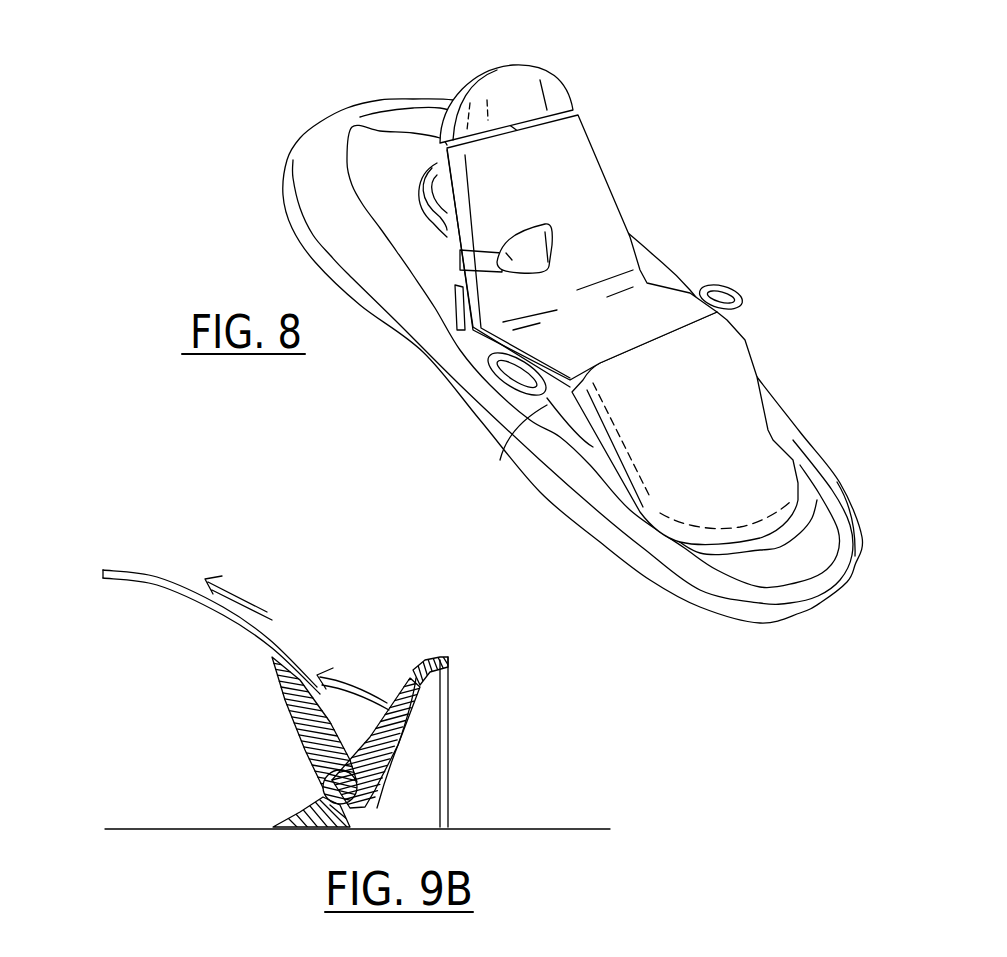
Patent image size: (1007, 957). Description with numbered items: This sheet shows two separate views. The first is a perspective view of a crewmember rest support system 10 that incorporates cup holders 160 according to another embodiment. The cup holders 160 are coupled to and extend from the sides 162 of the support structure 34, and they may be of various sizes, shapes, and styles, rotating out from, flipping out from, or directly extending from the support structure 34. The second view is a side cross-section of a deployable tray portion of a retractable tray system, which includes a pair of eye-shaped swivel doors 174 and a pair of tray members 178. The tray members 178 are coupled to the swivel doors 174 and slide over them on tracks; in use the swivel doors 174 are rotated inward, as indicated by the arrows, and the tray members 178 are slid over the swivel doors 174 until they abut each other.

In FIG. 8, the crewmember rest support system 10 is at (573, 344).
In FIG. 8, the cup holders 160 is at (500, 393).
In FIG. 8, the sides 162 is at (500, 460).
In FIG. 8, the support structure 34 is at (557, 432).
In FIG. 9B, the tray members 178 is at (270, 638).
In FIG. 9B, the swivel doors 174 is at (362, 695).